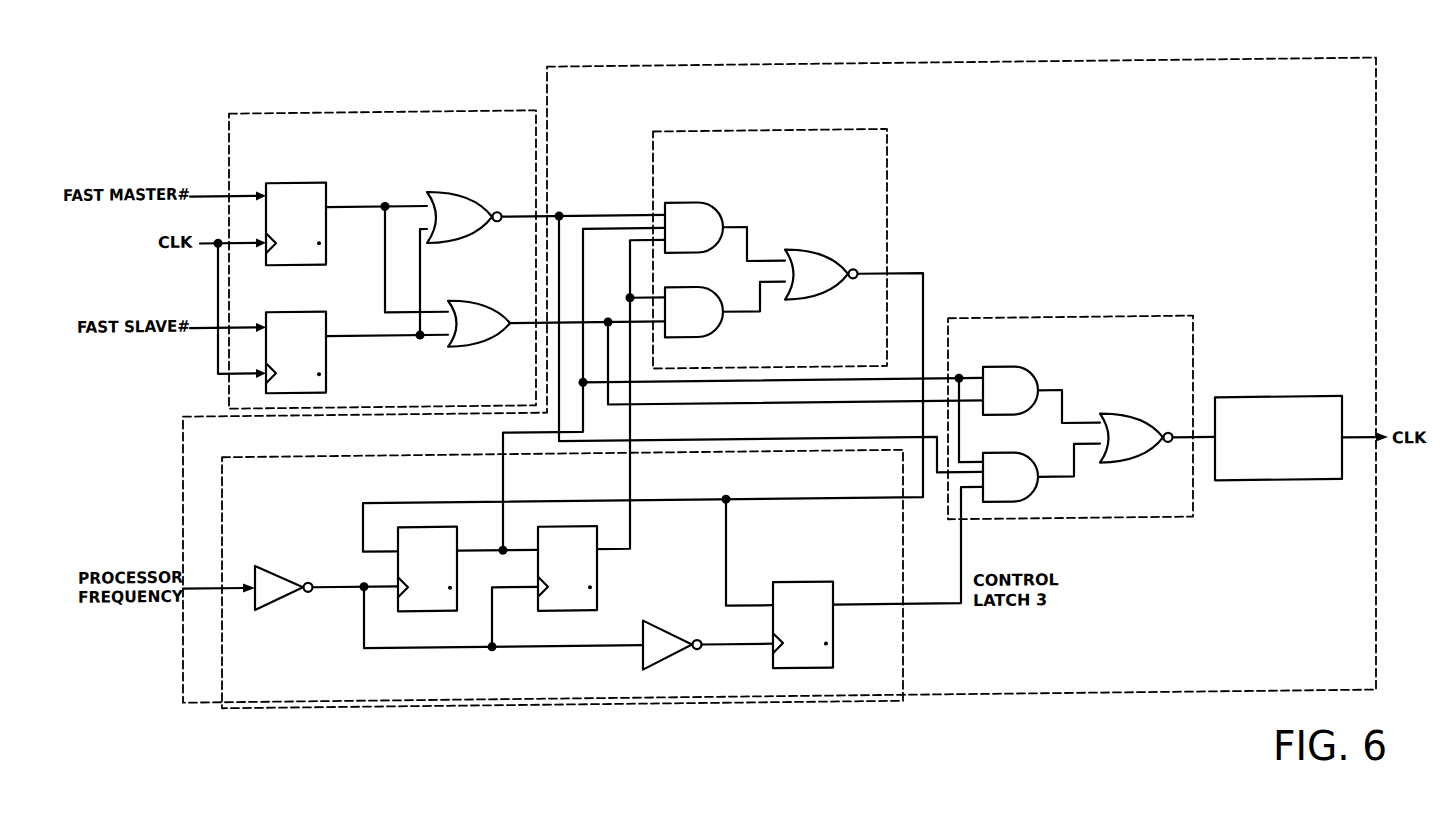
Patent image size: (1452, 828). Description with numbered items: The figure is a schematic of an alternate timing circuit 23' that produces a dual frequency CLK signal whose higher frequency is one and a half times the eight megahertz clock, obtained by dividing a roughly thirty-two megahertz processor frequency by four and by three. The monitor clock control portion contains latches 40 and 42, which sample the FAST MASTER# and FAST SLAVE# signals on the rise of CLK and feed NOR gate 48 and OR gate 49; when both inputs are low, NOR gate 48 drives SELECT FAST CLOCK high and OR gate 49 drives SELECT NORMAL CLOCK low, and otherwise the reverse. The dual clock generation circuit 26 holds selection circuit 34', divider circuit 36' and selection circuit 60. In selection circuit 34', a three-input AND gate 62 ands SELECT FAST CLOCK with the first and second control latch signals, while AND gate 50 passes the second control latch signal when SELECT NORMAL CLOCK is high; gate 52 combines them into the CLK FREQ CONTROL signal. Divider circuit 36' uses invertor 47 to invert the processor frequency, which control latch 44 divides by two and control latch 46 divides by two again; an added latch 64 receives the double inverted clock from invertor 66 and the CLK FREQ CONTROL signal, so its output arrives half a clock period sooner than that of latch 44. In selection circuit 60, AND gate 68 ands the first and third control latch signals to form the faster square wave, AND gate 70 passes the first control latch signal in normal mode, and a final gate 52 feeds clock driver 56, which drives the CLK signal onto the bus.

The timing circuit 23' is at (382, 212).
The dual clock generation circuit 26 is at (1376, 175).
The selection circuit 34' is at (793, 248).
The divider circuit 36' is at (562, 560).
The latch 40 is at (290, 178).
The latch 42 is at (290, 308).
The control latch 44 is at (425, 524).
The control latch 46 is at (565, 525).
The invertor 47 is at (281, 561).
The NOR gate 48 is at (440, 190).
The OR gate 49 is at (460, 298).
The AND gate 50 is at (690, 287).
The NOR gate 52 is at (800, 250).
The clock driver 56 is at (1262, 403).
The selection circuit 60 is at (1168, 321).
The three-input AND gate 62 is at (690, 202).
The latch 64 is at (800, 583).
The invertor 66 is at (669, 620).
The AND gate 68 is at (1010, 456).
The AND gate 70 is at (1010, 370).